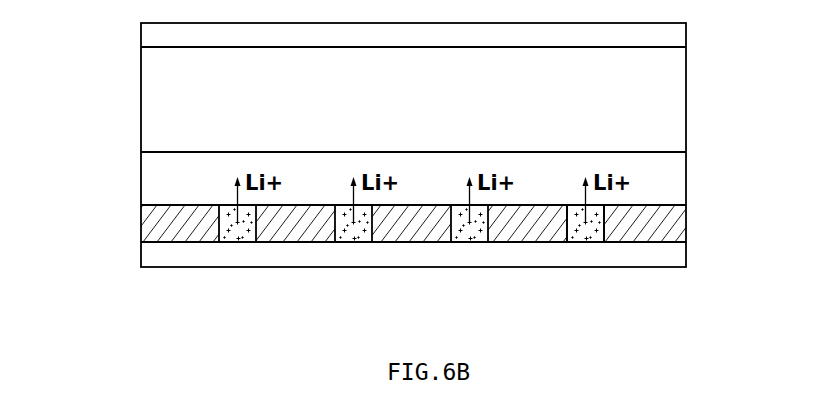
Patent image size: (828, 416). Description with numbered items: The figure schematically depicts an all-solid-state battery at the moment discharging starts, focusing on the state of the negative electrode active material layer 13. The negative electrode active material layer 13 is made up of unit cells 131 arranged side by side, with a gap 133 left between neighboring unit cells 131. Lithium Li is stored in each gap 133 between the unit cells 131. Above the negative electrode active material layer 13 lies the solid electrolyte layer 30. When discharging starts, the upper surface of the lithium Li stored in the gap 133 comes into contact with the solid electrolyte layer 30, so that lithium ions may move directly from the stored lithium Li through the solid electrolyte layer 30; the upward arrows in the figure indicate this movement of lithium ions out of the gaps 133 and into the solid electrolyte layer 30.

The solid electrolyte layer 30 is at (141, 175).
The negative electrode active material layer 13 is at (452, 249).
The unit cells 131 is at (686, 225).
The gap 133 is at (238, 235).
The lithium Li is at (586, 242).